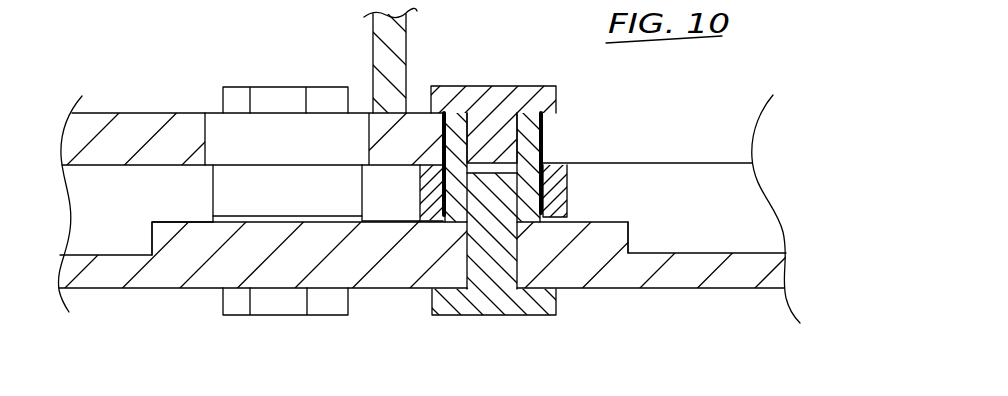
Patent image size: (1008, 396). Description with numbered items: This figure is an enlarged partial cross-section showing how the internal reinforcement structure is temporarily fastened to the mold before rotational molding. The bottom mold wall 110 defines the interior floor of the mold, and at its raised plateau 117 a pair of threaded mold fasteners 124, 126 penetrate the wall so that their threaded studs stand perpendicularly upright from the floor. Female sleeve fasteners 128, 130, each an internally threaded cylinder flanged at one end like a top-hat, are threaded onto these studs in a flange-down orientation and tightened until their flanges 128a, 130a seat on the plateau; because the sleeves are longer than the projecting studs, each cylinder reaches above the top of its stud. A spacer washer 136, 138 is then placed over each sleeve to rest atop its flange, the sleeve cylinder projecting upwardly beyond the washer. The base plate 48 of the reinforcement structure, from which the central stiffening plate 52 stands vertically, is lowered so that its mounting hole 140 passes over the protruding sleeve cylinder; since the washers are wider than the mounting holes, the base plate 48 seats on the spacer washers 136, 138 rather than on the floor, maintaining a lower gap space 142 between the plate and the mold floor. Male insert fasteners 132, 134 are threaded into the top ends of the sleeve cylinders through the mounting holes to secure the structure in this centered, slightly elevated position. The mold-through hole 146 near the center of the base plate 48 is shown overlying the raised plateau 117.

The base plate 48 is at (126, 128).
The mold-through hole 146 is at (220, 127).
The male insert fastener 132 is at (283, 98).
The central stiffening plate 52 is at (398, 38).
The male insert fastener 134 is at (512, 92).
The mounting hole 140 is at (545, 129).
The female sleeve fastener 130 is at (524, 187).
The mold fastener 126 is at (488, 308).
The bottom mold wall 110 is at (682, 280).
The raised plateau 117 is at (187, 238).
The lower gap space 142 is at (736, 205).
The mold fastener 124 is at (287, 310).
The spacer washer 136 is at (323, 178).
The flange 128a is at (253, 217).
The female sleeve fastener 128 is at (349, 210).
The spacer washer 138 is at (432, 197).
The flange 130a is at (565, 219).